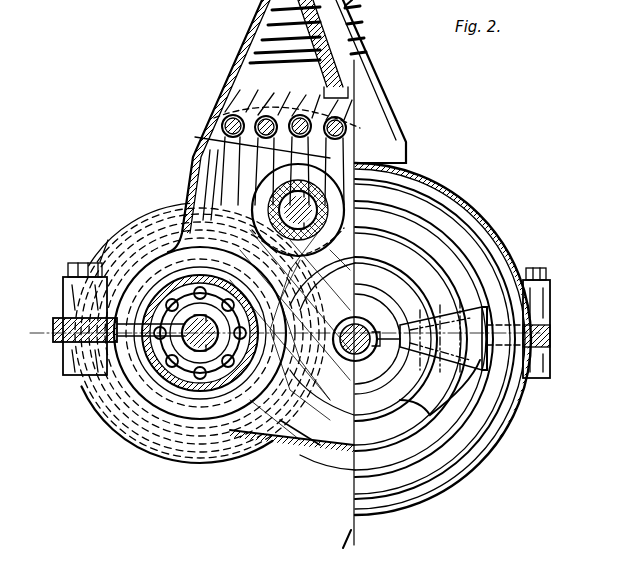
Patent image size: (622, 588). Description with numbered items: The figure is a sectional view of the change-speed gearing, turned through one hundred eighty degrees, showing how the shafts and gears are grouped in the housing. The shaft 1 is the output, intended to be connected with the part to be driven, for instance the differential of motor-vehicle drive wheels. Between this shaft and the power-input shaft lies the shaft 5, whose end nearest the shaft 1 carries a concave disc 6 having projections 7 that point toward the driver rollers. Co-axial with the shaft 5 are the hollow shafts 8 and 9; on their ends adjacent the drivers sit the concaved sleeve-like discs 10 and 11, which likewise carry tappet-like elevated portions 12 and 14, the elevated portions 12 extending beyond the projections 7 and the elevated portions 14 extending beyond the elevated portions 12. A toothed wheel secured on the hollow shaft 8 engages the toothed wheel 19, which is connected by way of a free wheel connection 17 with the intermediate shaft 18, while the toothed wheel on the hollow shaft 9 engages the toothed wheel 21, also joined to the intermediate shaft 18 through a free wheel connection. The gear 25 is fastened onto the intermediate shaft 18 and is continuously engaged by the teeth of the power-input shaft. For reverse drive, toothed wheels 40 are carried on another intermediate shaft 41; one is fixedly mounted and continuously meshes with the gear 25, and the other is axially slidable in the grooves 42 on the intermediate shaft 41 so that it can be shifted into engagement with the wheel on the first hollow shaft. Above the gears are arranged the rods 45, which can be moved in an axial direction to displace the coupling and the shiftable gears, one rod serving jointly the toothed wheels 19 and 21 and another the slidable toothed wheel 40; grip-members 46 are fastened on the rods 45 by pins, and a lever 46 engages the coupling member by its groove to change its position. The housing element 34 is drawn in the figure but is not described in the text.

The shaft 1 is at (53, 330).
The shaft 5 is at (330, 400).
The concave disc 6 is at (353, 436).
The projections 7 is at (366, 400).
The hollow shaft 8 is at (302, 402).
The hollow shaft 9 is at (282, 420).
The concaved sleeve-like disc 10 is at (372, 398).
The concaved sleeve-like disc 11 is at (440, 420).
The elevated portions 12 is at (500, 372).
The elevated portions 14 is at (485, 395).
The free wheel connection 17 is at (165, 402).
The intermediate shaft 18 is at (176, 340).
The toothed wheel 19 is at (120, 268).
The toothed wheel 21 is at (182, 410).
The gear 25 is at (238, 415).
The housing 34 is at (176, 265).
The toothed wheel 40 is at (311, 158).
The intermediate shaft 41 is at (370, 163).
The grooves 42 is at (283, 208).
The rods 45 is at (228, 120).
The grip-members 46 is at (195, 137).